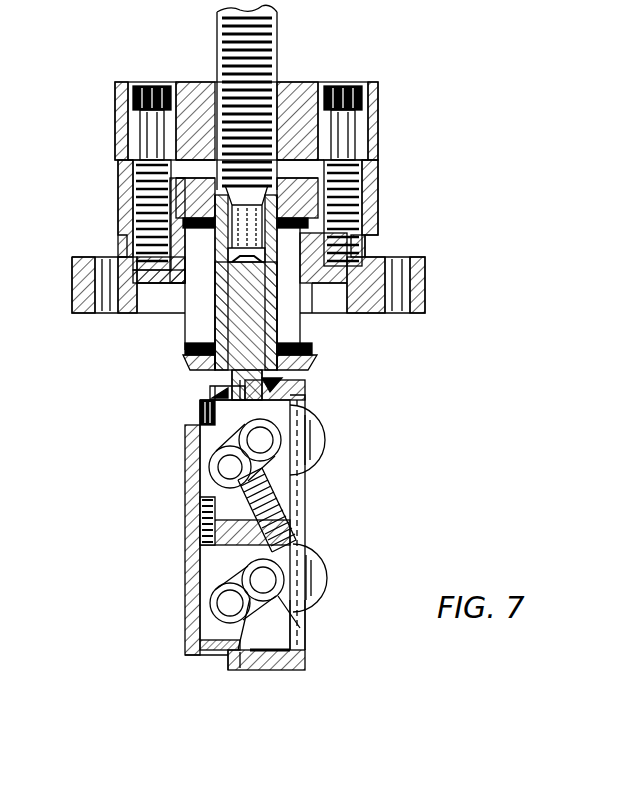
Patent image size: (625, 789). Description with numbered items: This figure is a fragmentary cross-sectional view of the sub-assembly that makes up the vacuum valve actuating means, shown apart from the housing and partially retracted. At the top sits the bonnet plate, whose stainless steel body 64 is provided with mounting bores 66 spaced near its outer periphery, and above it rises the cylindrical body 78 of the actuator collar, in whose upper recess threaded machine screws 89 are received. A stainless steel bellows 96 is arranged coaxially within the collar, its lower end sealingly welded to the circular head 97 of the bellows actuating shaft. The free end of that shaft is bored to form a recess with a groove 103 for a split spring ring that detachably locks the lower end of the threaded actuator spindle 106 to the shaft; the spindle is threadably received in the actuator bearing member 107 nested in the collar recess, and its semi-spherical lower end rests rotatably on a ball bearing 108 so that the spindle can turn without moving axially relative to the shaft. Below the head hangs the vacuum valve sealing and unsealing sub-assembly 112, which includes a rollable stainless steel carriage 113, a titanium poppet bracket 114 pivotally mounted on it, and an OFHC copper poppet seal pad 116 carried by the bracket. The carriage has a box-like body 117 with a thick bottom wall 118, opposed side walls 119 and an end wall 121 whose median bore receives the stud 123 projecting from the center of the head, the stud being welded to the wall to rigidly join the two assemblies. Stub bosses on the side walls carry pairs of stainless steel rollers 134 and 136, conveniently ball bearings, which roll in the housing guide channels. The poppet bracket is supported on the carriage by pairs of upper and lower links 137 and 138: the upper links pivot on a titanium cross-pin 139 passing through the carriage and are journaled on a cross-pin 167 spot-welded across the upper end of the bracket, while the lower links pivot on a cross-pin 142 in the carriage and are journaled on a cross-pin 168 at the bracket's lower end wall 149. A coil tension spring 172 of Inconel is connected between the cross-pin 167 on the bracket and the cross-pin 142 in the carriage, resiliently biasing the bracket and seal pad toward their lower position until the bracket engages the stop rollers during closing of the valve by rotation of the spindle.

The body 64 is at (426, 292).
The mounting bores 66 is at (395, 257).
The cylindrical body 78 is at (378, 172).
The threaded machine screw 89 is at (378, 125).
The bellows 96 is at (313, 327).
The circular head 97 is at (300, 369).
The groove 103 is at (185, 242).
The threaded actuator spindle 106 is at (278, 52).
The actuator bearing member 107 is at (187, 82).
The ball bearing 108 is at (225, 262).
The vacuum valve sealing and unsealing sub-assembly 112 is at (342, 514).
The rollable stainless steel carriage 113 is at (324, 544).
The titanium poppet bracket 114 is at (200, 578).
The poppet seal pad 116 is at (217, 577).
The box-like body 117 is at (315, 597).
The bottom wall 118 is at (283, 672).
The side walls 119 is at (269, 623).
The end wall 121 is at (305, 392).
The stud 123 is at (215, 392).
The rollers 134 is at (325, 433).
The rollers 136 is at (330, 570).
The upper links 137 is at (268, 453).
The lower links 138 is at (240, 668).
The cross-pin 139 is at (323, 457).
The cross-pin 142 is at (305, 626).
The lower end wall 149 is at (205, 655).
The cross-pin 167 is at (207, 432).
The cross-pin 168 is at (233, 606).
The coil tension spring 172 is at (212, 484).